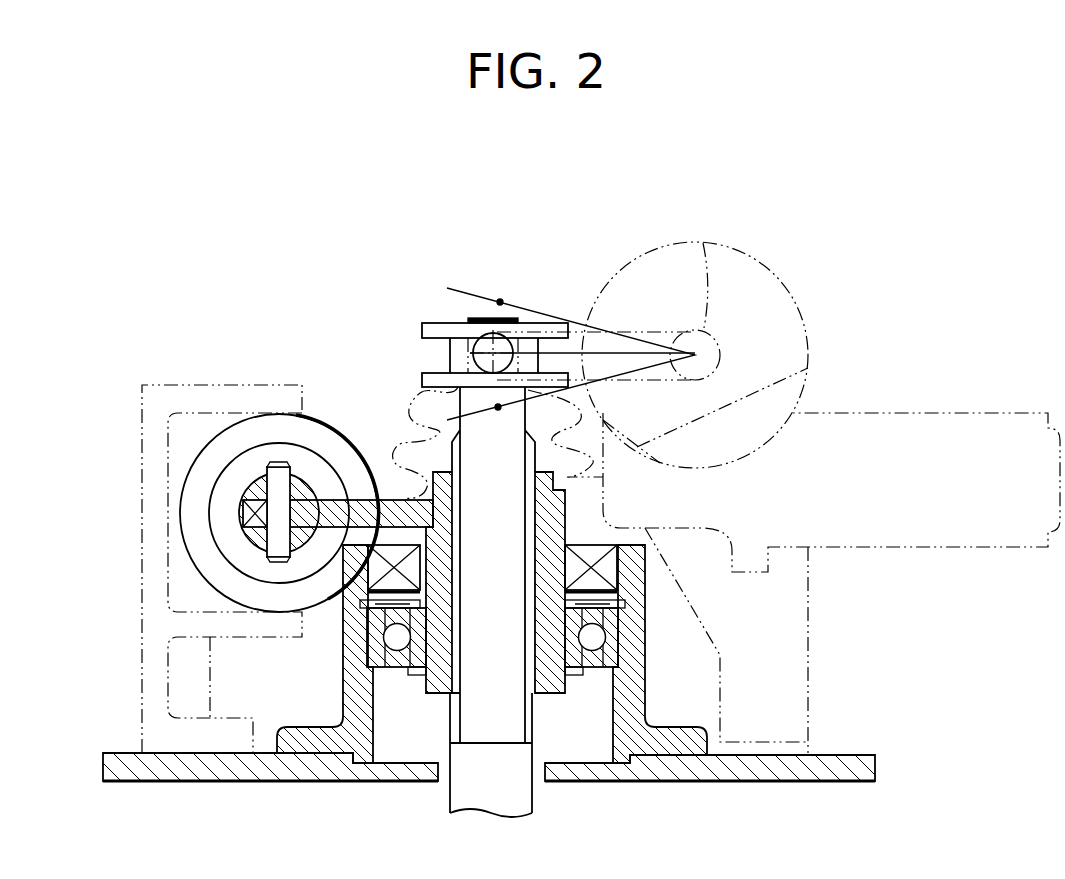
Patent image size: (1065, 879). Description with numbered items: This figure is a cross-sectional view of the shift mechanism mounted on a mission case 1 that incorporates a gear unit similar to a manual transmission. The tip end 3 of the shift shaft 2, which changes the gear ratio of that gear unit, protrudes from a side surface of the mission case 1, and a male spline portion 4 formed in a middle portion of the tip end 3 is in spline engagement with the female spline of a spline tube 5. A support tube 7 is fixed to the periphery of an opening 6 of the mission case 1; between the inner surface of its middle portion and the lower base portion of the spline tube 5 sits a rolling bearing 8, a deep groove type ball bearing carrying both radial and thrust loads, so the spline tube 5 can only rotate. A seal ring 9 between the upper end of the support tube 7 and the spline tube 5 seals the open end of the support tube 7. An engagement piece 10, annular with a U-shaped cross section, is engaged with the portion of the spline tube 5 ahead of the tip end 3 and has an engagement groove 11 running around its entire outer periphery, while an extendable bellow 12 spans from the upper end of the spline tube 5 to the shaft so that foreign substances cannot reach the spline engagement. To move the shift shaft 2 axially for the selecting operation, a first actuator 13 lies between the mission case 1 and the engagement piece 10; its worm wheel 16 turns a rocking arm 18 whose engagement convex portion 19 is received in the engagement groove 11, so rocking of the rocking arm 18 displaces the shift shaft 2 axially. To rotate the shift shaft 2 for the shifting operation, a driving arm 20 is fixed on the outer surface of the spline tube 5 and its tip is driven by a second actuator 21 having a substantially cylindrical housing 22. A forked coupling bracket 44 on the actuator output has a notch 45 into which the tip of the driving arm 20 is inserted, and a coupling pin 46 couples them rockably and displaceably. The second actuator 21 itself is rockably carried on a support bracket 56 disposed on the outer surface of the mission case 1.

The mission case 1 is at (857, 755).
The shift shaft 2 is at (513, 710).
The tip end 3 is at (408, 457).
The male spline portion 4 is at (458, 675).
The spline tube 5 is at (473, 497).
The opening 6 is at (627, 768).
The support tube 7 is at (345, 678).
The rolling bearing 8 is at (592, 643).
The seal ring 9 is at (607, 568).
The engagement piece 10 is at (438, 328).
The engagement groove 11 is at (555, 340).
The extendable bellow 12 is at (808, 368).
The first actuator 13 is at (1000, 548).
The worm wheel 16 is at (808, 328).
The rocking arm 18 is at (703, 243).
The engagement convex portion 19 is at (505, 425).
The driving arm 20 is at (333, 513).
The second actuator 21 is at (237, 432).
The housing 22 is at (274, 447).
The coupling bracket 44 is at (243, 533).
The notch 45 is at (243, 513).
The coupling pin 46 is at (277, 488).
The support bracket 56 is at (142, 613).